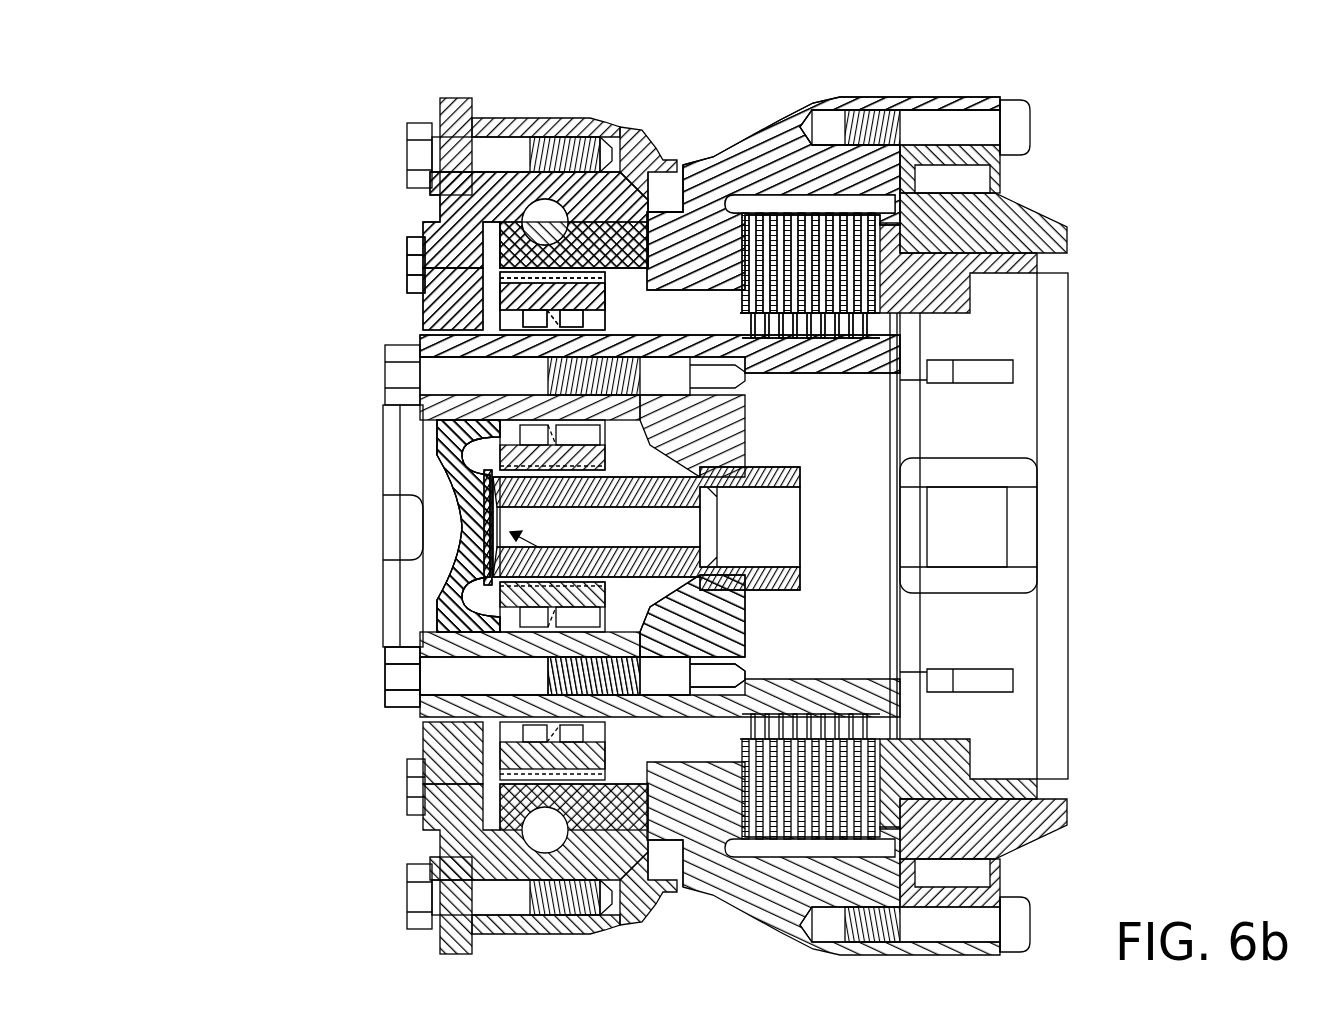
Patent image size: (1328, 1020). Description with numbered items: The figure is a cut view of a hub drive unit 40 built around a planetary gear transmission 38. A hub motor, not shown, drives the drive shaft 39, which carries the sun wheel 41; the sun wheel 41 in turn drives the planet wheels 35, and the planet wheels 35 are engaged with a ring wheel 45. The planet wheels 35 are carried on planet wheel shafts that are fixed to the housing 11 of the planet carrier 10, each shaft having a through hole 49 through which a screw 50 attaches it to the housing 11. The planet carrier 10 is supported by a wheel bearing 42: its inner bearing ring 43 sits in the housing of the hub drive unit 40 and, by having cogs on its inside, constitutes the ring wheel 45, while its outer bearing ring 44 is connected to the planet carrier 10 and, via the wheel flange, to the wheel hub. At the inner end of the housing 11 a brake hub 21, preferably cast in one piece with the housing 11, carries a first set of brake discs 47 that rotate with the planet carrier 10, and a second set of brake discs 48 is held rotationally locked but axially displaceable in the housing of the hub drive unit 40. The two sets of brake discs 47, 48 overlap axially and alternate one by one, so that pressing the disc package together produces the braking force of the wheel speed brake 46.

The hub drive unit 40 is at (270, 165).
The outer bearing ring 44 is at (445, 212).
The ring wheel 45 is at (452, 270).
The planet wheels 35 is at (455, 298).
The planet carrier 10 is at (437, 318).
The sun wheel 41 is at (490, 512).
The drive shaft 39 is at (500, 497).
The planetary gear transmission 38 is at (462, 507).
The through hole 49 is at (460, 653).
The screws 50 is at (440, 677).
The housing 11 is at (682, 732).
The brake hub 21 is at (863, 358).
The wheel bearing 42 is at (543, 222).
The inner bearing ring 43 is at (618, 228).
The second set of brake discs 48 is at (705, 227).
The first set of brake discs 47 is at (753, 222).
The brake 46 is at (832, 212).